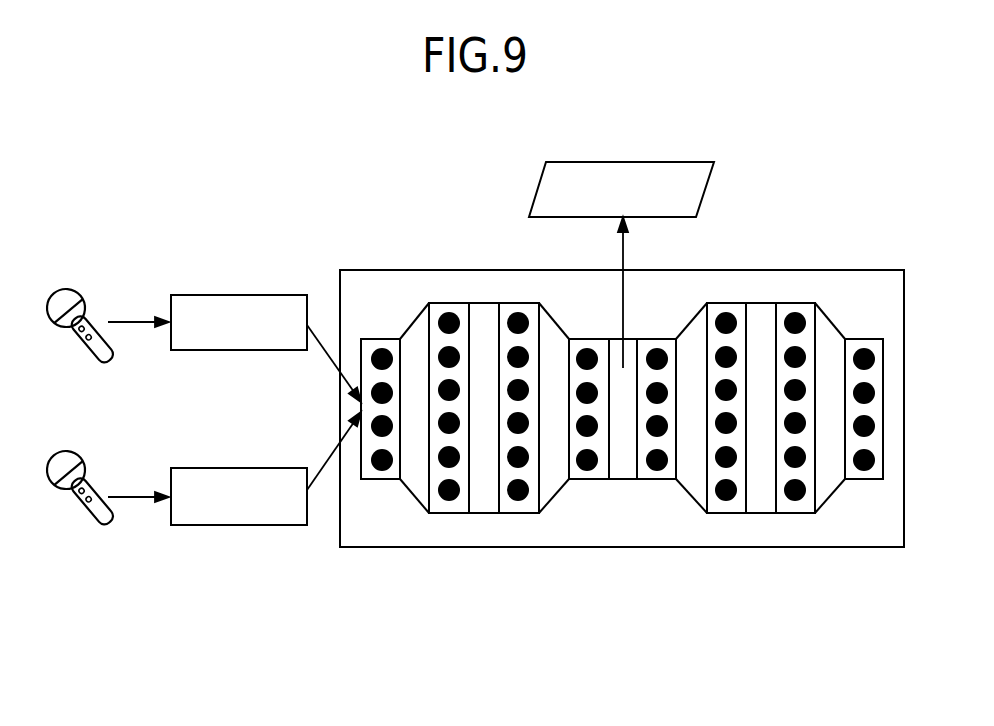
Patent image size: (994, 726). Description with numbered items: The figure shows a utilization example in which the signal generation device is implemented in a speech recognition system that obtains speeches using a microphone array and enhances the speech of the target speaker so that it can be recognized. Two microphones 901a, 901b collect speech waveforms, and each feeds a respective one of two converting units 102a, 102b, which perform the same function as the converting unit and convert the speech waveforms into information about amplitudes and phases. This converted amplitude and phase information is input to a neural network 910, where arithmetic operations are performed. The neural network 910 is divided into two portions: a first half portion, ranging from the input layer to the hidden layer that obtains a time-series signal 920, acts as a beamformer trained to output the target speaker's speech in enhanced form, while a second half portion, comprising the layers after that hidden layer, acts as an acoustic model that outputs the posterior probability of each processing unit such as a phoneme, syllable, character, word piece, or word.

The microphone 901a is at (66, 289).
The microphone 901b is at (66, 451).
The converting unit 102a is at (240, 295).
The converting unit 102b is at (240, 468).
The neural network 910 is at (767, 270).
The time-series signal 920 is at (642, 162).